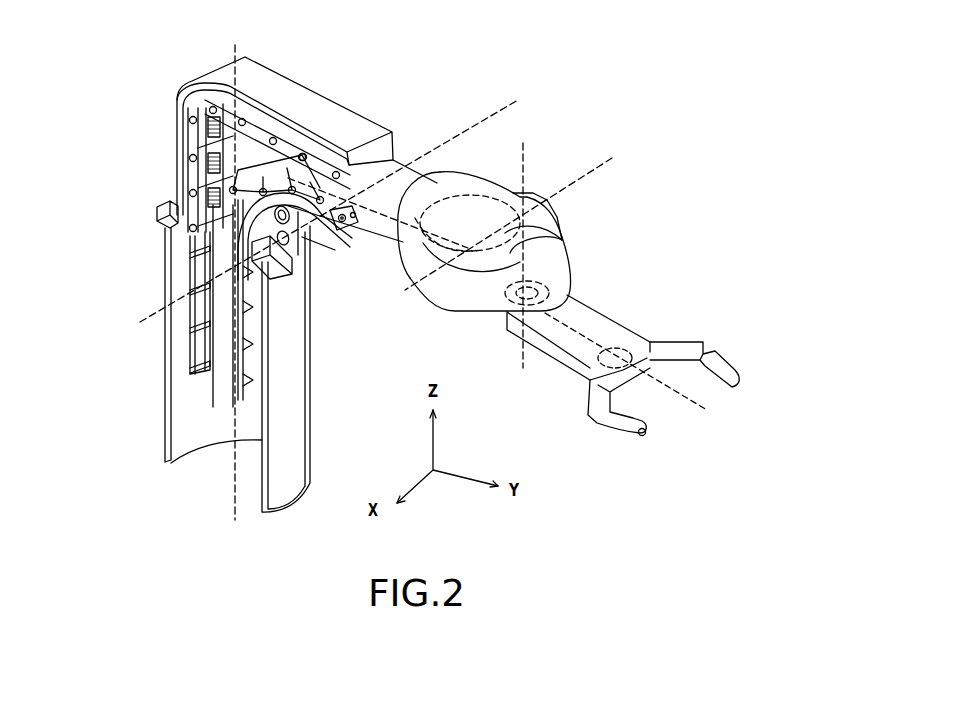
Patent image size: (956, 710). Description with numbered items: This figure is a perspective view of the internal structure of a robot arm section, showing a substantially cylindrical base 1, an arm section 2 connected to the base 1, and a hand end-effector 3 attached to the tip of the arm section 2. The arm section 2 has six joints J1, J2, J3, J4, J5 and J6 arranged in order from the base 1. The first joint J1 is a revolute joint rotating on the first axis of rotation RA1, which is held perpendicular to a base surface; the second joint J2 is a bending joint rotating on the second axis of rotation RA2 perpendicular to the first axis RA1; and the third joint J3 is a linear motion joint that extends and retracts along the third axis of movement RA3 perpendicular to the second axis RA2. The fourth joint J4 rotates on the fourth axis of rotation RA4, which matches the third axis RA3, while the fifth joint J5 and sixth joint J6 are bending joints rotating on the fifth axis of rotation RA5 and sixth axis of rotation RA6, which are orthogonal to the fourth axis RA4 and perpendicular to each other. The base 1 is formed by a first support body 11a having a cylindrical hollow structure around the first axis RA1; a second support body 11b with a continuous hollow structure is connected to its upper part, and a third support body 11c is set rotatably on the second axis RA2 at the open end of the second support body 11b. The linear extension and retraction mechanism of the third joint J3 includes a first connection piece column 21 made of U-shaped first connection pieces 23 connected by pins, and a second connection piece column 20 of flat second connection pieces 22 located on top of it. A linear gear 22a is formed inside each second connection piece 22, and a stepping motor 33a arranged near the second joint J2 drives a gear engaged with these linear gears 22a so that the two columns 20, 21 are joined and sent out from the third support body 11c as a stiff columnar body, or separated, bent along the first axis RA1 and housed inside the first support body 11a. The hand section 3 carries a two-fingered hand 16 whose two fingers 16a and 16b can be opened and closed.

The base 1 is at (135, 299).
The arm section 2 is at (395, 120).
The hand end-effector 3 is at (608, 303).
The first support body 11a is at (308, 388).
The second support body 11b is at (178, 147).
The third support body 11c is at (343, 113).
The two-fingered hand 16 is at (615, 461).
The finger 16a is at (647, 436).
The finger 16b is at (678, 347).
The second connection piece column 20 is at (190, 130).
The first connection piece column 21 is at (206, 388).
The second connection piece 22 is at (195, 178).
The linear gear 22a is at (204, 168).
The first connection piece 23 is at (250, 356).
The stepping motor 33a is at (321, 222).
The first joint J1 is at (160, 212).
The second joint J2 is at (298, 256).
The third joint J3 is at (432, 179).
The fourth joint J4 is at (478, 200).
The fifth joint J5 is at (440, 275).
The sixth joint J6 is at (502, 308).
The first axis of rotation RA1 is at (234, 293).
The second axis of rotation RA2 is at (348, 204).
The third axis of movement RA3 is at (657, 373).
The fourth axis of rotation RA4 is at (657, 373).
The fifth axis of rotation RA5 is at (528, 213).
The sixth axis of rotation RA6 is at (521, 245).